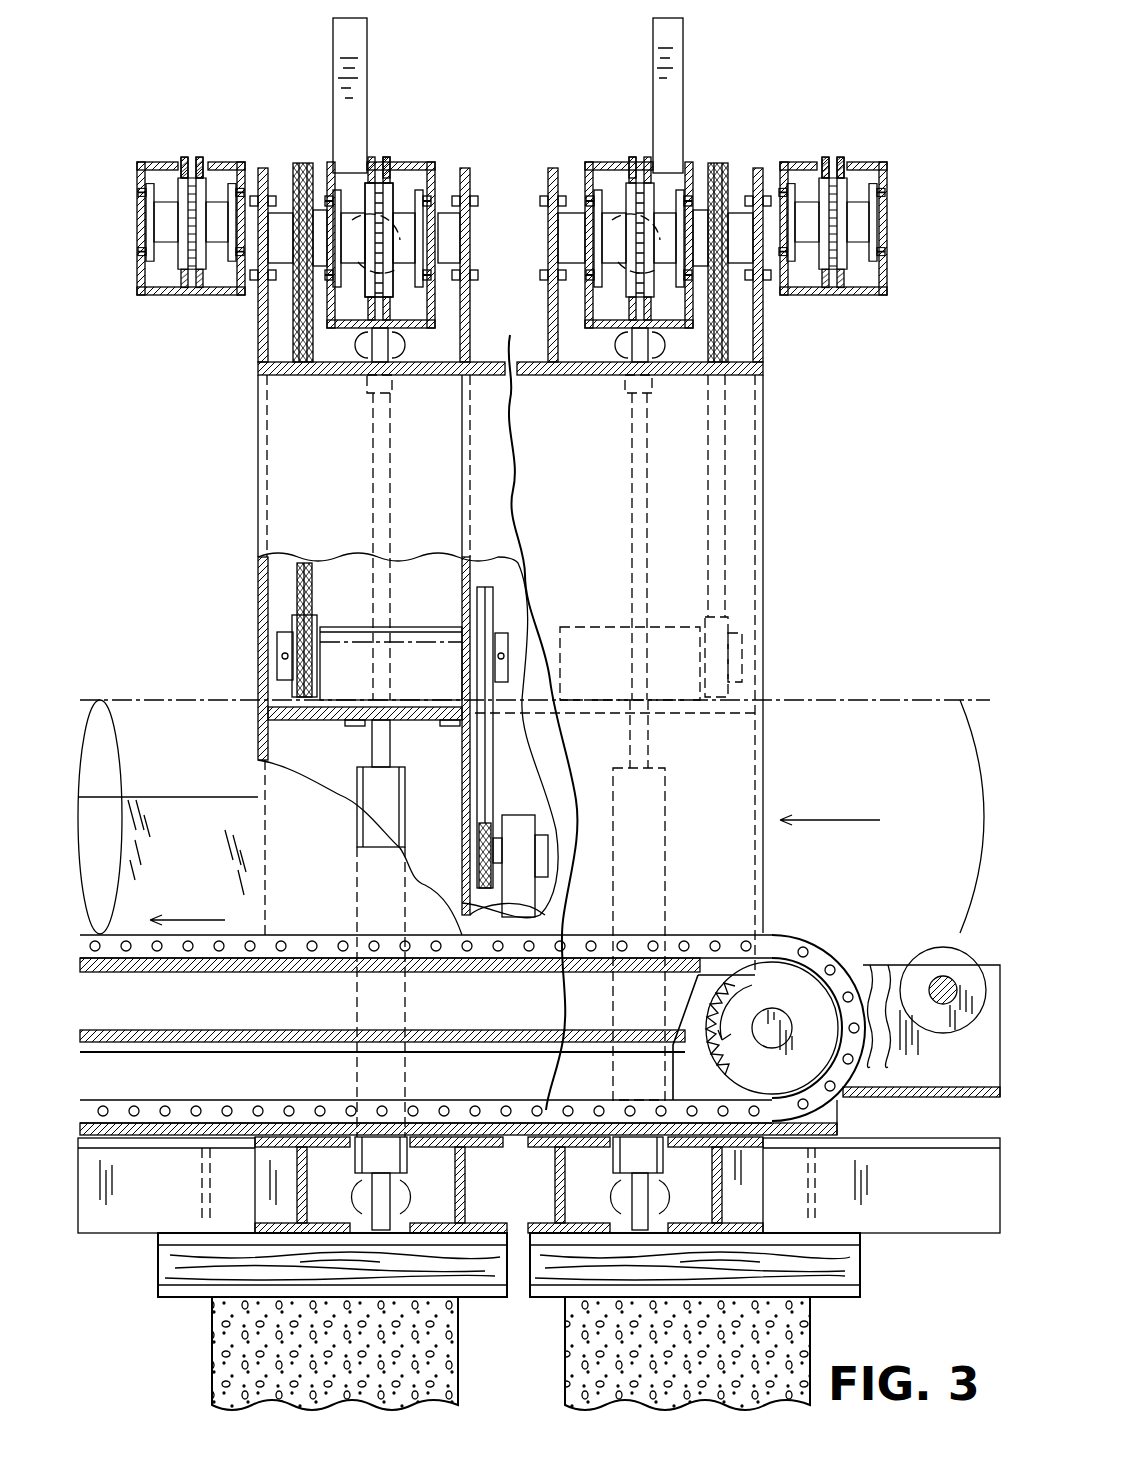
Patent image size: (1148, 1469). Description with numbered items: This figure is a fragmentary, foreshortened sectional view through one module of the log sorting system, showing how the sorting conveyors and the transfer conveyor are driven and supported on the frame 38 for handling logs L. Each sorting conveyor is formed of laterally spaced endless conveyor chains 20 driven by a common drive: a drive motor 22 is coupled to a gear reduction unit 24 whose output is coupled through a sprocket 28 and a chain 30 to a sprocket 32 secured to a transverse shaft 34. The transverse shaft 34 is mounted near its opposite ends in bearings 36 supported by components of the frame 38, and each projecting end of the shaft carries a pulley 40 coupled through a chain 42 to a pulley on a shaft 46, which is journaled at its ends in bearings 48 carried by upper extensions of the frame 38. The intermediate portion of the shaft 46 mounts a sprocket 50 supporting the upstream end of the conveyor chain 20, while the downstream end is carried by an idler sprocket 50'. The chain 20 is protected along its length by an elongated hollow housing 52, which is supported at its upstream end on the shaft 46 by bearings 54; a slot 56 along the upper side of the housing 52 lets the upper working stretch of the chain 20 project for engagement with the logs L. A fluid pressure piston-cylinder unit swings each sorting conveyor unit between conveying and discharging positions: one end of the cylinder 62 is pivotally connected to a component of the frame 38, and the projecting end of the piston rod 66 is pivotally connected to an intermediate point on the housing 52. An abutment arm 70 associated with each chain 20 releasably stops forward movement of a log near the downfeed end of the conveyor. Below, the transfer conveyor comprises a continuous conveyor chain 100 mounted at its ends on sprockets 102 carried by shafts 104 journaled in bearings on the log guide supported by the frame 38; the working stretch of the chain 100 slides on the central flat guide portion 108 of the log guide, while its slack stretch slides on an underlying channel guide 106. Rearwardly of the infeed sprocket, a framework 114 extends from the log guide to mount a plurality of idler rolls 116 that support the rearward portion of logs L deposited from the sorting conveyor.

The abutment arm 70 is at (345, 50).
The bearings 54 is at (415, 232).
The endless conveyor chain 20 is at (183, 163).
The idler sprocket 50' is at (520, 144).
The sprocket 50 is at (379, 207).
The slot 56 is at (204, 165).
The bearings 48 is at (283, 213).
The shaft 46 is at (433, 238).
The pulley 40 is at (305, 165).
The housing 52 is at (402, 328).
The frame 38 is at (520, 362).
The chain 42 is at (312, 585).
The bearings 36 is at (408, 627).
The sprocket 32 is at (488, 590).
The transverse shaft 34 is at (510, 655).
The chain 30 is at (493, 770).
The sprocket 28 is at (497, 830).
The gear reduction unit 24 is at (527, 832).
The drive motor 22 is at (422, 893).
The piston rod 66 is at (383, 740).
The cylinder 62 is at (401, 800).
The log L is at (890, 700).
The transfer conveyor chain 100 is at (312, 945).
The central flat guide portion 108 is at (325, 966).
The channel guide 106 is at (522, 1135).
The shaft 104 is at (778, 985).
The sprocket 102 is at (772, 1028).
The idler roll 116 is at (940, 955).
The framework 114 is at (877, 1093).